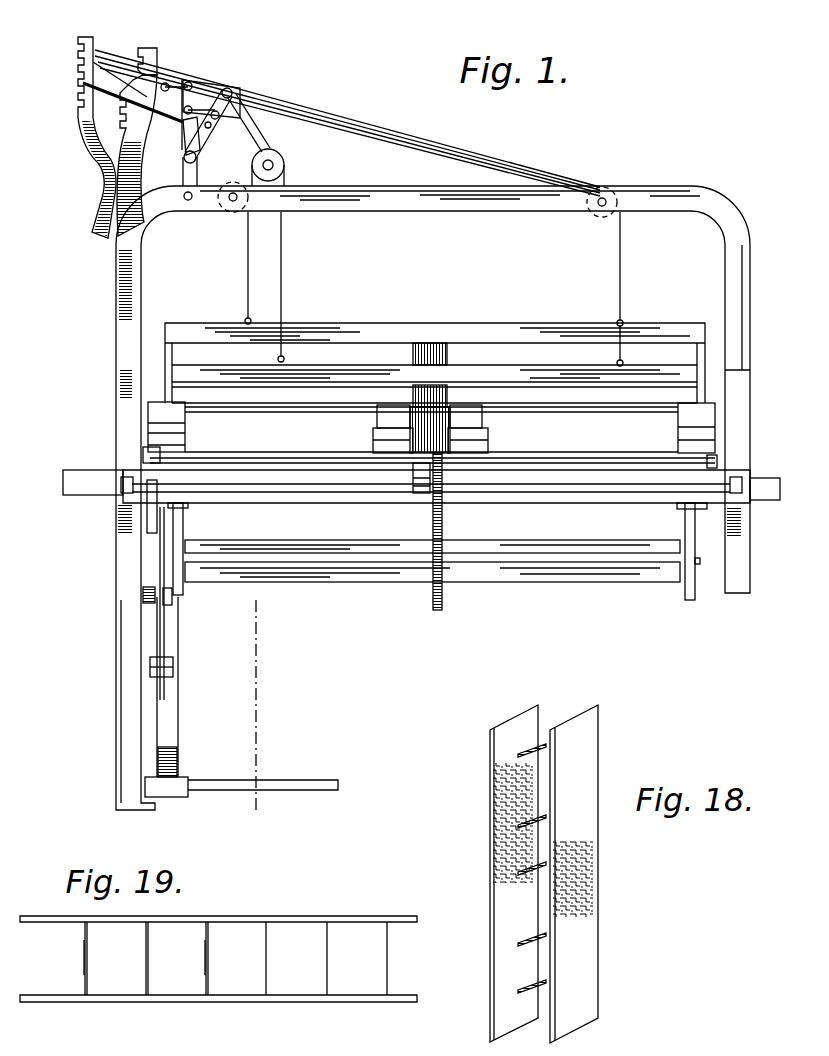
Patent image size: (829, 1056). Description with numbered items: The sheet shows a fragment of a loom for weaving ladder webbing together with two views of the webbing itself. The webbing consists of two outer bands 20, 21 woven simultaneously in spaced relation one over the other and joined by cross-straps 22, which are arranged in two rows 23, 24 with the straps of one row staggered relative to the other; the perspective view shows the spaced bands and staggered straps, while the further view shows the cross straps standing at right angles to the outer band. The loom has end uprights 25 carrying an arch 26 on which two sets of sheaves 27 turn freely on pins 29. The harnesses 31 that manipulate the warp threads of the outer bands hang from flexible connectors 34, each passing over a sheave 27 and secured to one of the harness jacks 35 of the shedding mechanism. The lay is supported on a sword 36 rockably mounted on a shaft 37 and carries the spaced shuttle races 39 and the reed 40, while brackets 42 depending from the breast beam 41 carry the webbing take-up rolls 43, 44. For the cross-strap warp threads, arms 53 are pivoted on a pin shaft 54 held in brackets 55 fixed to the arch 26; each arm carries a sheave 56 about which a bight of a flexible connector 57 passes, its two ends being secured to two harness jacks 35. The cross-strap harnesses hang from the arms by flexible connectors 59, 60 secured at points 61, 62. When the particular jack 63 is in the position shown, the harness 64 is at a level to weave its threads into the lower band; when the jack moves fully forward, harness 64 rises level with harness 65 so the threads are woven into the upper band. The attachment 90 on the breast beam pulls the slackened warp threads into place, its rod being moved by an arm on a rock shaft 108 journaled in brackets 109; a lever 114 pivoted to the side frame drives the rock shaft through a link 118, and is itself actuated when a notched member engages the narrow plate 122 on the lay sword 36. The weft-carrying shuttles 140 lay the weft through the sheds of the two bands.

In FIG. 18, the outer band 20 is at (490, 774).
In FIG. 19, the outer band 20 is at (293, 920).
In FIG. 18, the outer band 21 is at (598, 751).
In FIG. 19, the outer band 21 is at (290, 1003).
In FIG. 18, the cross-strap 22 is at (512, 939).
In FIG. 19, the cross-strap 22 is at (83, 981).
In FIG. 18, the row of cross-straps 23 is at (508, 825).
In FIG. 19, the row of cross-straps 23 is at (146, 945).
In FIG. 18, the row of cross-straps 24 is at (535, 746).
In FIG. 19, the row of cross-straps 24 is at (84, 958).
In FIG. 1, the end upright 25 is at (745, 578).
In FIG. 1, the arch member 26 is at (443, 204).
In FIG. 1, the sheave 27 is at (240, 214).
In FIG. 1, the pin 29 is at (225, 205).
In FIG. 1, the harness 31 is at (340, 320).
In FIG. 1, the flexible connector 34 is at (113, 56).
In FIG. 1, the harness jack 35 is at (75, 134).
In FIG. 1, the lay sword 36 is at (180, 716).
In FIG. 1, the shaft 37 is at (210, 782).
In FIG. 1, the shuttle race 39 is at (490, 461).
In FIG. 1, the reed 40 is at (410, 419).
In FIG. 1, the breast beam 41 is at (555, 499).
In FIG. 1, the bracket 42 is at (188, 526).
In FIG. 1, the webbing take-up roll 43 is at (567, 555).
In FIG. 1, the webbing take-up roll 44 is at (533, 564).
In FIG. 1, the arm 53 is at (240, 99).
In FIG. 1, the pin shaft 54 is at (184, 156).
In FIG. 1, the bracket 55 is at (185, 169).
In FIG. 1, the sheave 56 is at (192, 143).
In FIG. 1, the flexible connector 57 is at (143, 108).
In FIG. 1, the flexible connector 59 is at (287, 286).
In FIG. 1, the flexible connector 60 is at (626, 331).
In FIG. 1, the connection point 61 is at (232, 117).
In FIG. 1, the connection point 62 is at (227, 88).
In FIG. 1, the harness jack 63 is at (152, 52).
In FIG. 1, the harness 64 is at (353, 367).
In FIG. 1, the harness 65 is at (470, 326).
In FIG. 1, the attachment 90 is at (411, 481).
In FIG. 1, the rock shaft 108 is at (305, 494).
In FIG. 1, the bracket 109 is at (122, 473).
In FIG. 1, the lever 114 is at (166, 631).
In FIG. 1, the link 118 is at (147, 523).
In FIG. 1, the narrow plate 122 is at (153, 688).
In FIG. 1, the weft-carrying shuttle 140 is at (410, 443).